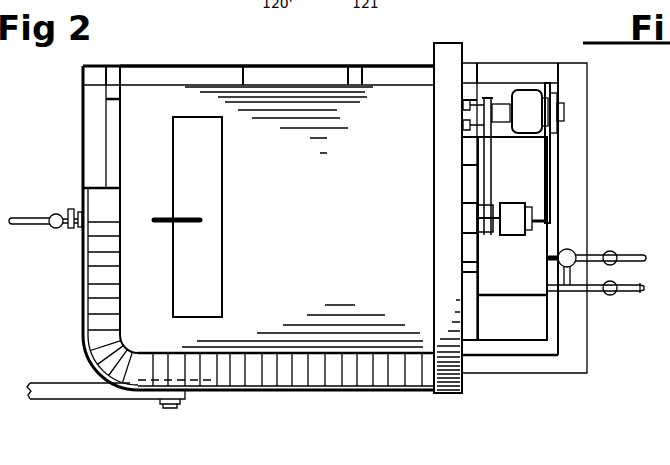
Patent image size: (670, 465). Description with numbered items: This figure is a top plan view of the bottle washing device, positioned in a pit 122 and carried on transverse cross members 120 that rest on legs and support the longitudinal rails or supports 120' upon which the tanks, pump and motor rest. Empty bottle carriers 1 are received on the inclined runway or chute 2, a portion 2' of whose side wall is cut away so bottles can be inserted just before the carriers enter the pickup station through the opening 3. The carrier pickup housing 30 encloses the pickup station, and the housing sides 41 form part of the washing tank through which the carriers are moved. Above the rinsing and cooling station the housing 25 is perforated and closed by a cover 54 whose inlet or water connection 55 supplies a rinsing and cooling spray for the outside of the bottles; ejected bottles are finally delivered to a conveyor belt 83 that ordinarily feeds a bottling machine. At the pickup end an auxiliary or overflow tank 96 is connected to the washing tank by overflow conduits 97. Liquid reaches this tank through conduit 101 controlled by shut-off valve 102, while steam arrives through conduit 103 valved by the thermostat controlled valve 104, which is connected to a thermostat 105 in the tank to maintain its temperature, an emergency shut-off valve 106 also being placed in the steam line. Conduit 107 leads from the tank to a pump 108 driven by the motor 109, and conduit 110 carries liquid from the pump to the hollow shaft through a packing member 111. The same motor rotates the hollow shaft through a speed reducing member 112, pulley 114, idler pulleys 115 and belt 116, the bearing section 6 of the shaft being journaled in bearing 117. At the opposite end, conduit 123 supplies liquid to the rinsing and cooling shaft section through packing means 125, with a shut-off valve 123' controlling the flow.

The bottle carriers 1 is at (288, 379).
The inclined runway or chute 2 is at (271, 385).
The cut-away portion of chute side wall 2' is at (286, 401).
The opening 3 is at (432, 378).
The bearing section 6 is at (496, 233).
The housing 25 is at (325, 200).
The carrier pickup housing 30 is at (442, 127).
The housing sides 41 is at (262, 82).
The cover 54 is at (222, 205).
The inlet or water connection 55 is at (194, 216).
The conveyor belt 83 is at (76, 393).
The auxiliary or overflow tank 96 is at (537, 243).
The overflow conduits 97 is at (470, 284).
The conduit 101 is at (640, 293).
The shut-off valve 102 is at (612, 296).
The steam conduit 103 is at (633, 258).
The thermostat controlled valve 104 is at (577, 256).
The thermostat 105 is at (550, 259).
The emergency shut-off valve 106 is at (615, 265).
The conduit 107 is at (558, 158).
The pump 108 is at (564, 124).
The motor 109 is at (528, 92).
The conduit 110 is at (552, 198).
The packing member 111 is at (510, 210).
The speed reducing member 112 is at (501, 108).
The pulley 114 is at (488, 221).
The idler pulleys 115 is at (484, 97).
The belt 116 is at (489, 168).
The bearing 117 is at (472, 224).
The cross members 120 is at (372, 62).
The longitudinal rails or supports 120' is at (75, 200).
The pit 122 is at (162, 76).
The conduit 123 is at (38, 204).
The shut-off valve 123' is at (41, 234).
The packing means 125 is at (77, 232).